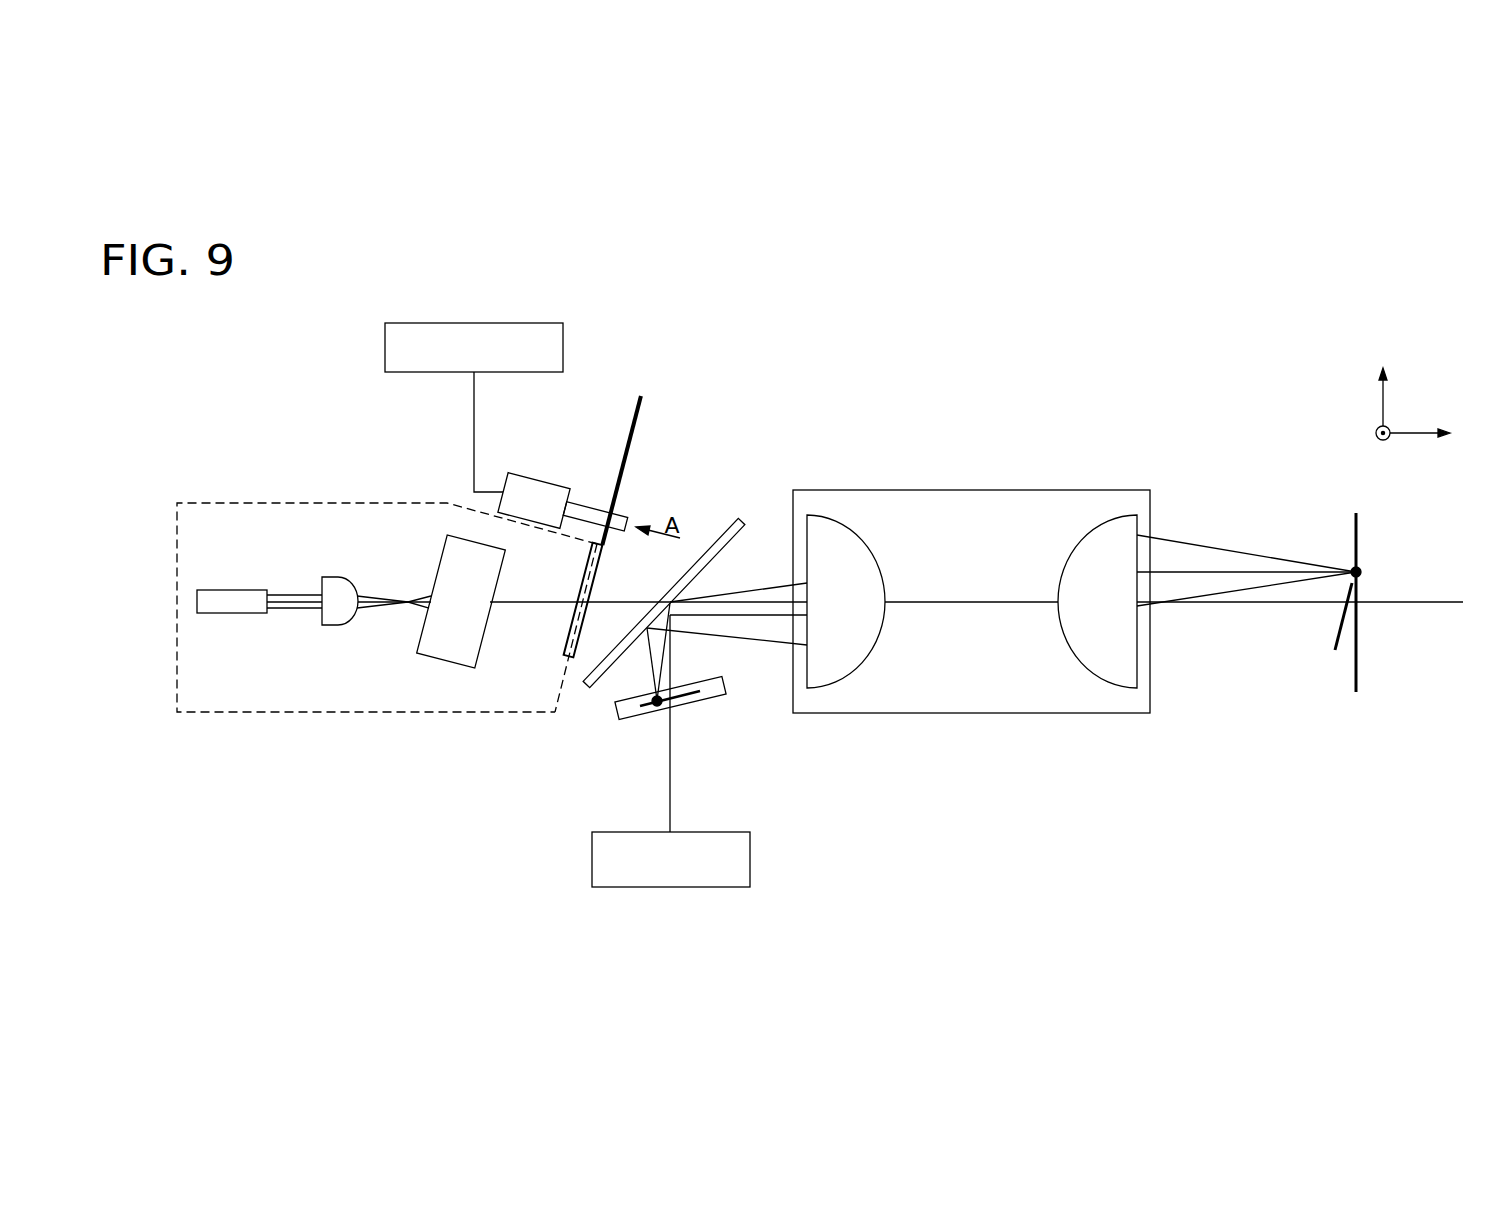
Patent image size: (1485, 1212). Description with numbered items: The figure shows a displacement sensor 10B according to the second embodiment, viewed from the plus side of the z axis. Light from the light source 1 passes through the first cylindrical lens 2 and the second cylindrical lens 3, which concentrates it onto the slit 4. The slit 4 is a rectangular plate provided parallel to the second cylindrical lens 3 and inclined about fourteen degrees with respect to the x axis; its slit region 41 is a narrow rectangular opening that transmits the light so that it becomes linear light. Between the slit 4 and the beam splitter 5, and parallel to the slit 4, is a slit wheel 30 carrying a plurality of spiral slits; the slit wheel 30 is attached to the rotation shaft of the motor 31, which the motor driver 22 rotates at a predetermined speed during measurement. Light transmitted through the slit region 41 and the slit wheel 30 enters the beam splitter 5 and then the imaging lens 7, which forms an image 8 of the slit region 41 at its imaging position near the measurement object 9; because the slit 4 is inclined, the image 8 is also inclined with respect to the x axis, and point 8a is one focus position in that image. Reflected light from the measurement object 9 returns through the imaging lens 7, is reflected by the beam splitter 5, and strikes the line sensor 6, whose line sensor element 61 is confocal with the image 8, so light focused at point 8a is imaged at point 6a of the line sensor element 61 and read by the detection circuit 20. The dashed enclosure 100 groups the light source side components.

The light source 1 is at (229, 590).
The first cylindrical lens 2 is at (336, 577).
The second cylindrical lens 3 is at (440, 667).
The slit 4 is at (566, 642).
The slit region 41 is at (570, 614).
The beam splitter 5 is at (727, 521).
The line sensor 6 is at (615, 714).
The line sensor element 61 is at (688, 698).
The point of the line sensor element 6a is at (657, 710).
The imaging lens 7 is at (978, 490).
The image 8 is at (1340, 624).
The point of the image 8a is at (1362, 571).
The measurement object 9 is at (1354, 535).
The displacement sensor 10B is at (1118, 372).
The detection circuit 20 is at (697, 832).
The motor driver 22 is at (502, 323).
The slit wheel 30 is at (641, 417).
The motor 31 is at (537, 472).
The light source unit 100 is at (305, 502).